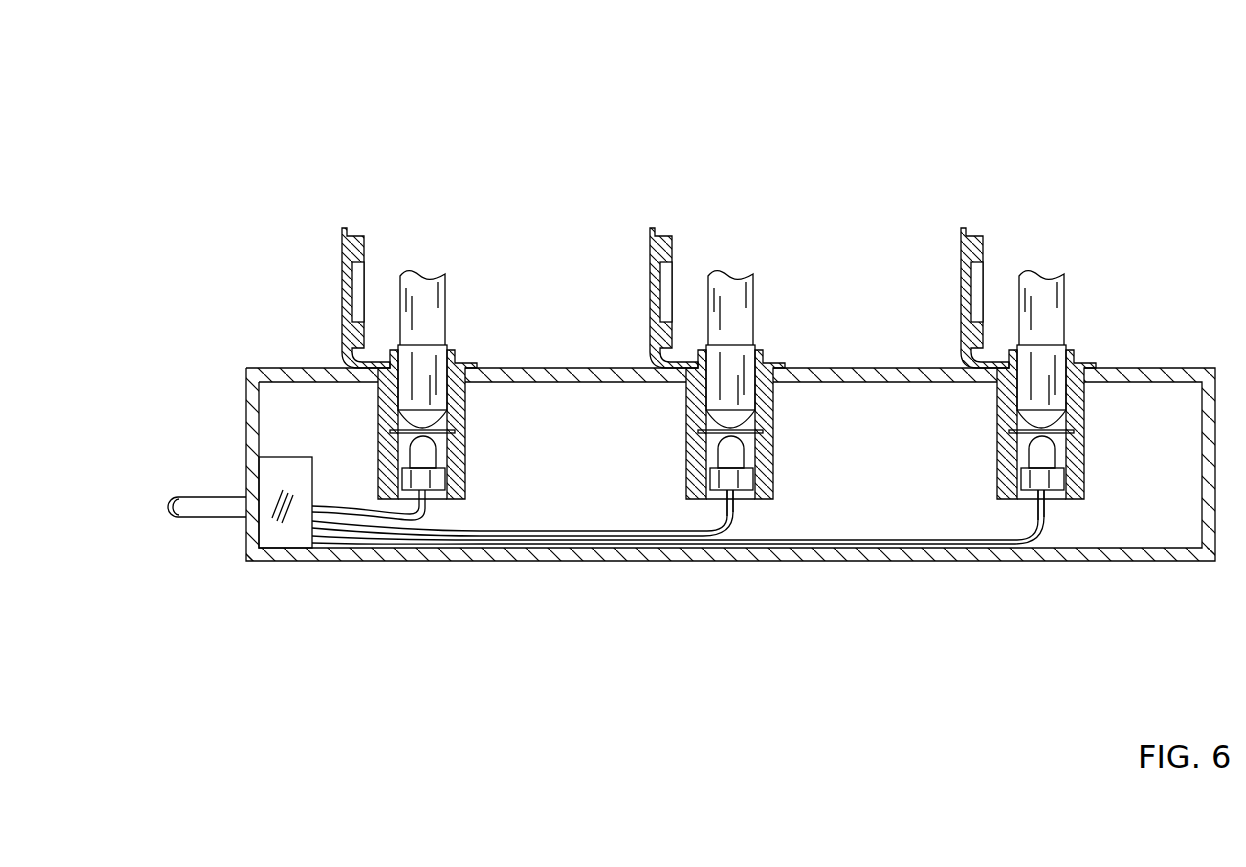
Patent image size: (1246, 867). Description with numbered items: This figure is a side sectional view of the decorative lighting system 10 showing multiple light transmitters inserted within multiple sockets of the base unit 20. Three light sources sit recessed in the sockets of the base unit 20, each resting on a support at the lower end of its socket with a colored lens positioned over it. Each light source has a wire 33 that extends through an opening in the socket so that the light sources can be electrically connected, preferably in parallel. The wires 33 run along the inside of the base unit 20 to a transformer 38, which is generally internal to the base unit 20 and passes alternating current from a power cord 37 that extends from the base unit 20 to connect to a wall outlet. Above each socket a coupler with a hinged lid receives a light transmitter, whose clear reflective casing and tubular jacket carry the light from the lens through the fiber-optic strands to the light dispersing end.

The decorative lighting system 10 is at (1117, 156).
The base unit 20 is at (326, 562).
The wire 33 is at (368, 515).
The power cord 37 is at (236, 518).
The transformer 38 is at (289, 465).